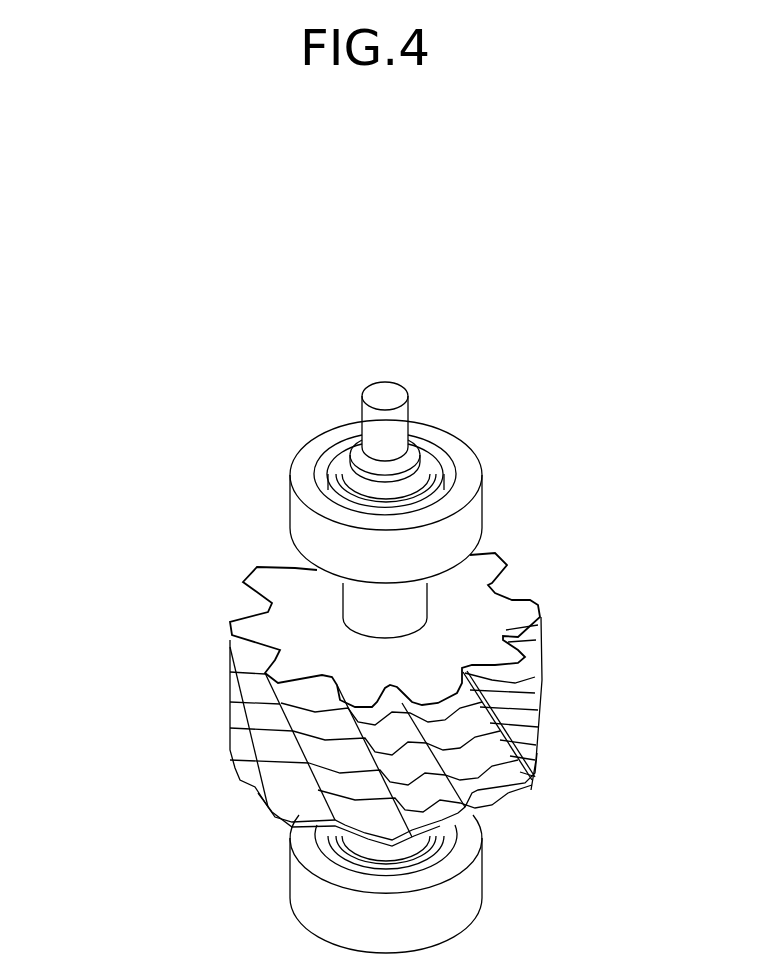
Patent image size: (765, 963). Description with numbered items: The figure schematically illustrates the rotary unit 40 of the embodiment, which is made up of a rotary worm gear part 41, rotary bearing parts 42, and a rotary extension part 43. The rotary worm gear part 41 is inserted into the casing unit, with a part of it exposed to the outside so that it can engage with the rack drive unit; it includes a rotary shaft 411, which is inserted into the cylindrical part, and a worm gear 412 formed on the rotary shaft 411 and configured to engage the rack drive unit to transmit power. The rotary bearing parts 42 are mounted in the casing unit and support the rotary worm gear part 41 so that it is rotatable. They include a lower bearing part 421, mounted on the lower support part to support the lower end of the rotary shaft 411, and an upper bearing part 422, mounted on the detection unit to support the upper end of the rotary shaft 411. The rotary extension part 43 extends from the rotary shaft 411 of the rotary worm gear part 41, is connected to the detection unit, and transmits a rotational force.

The rotary unit 40 is at (665, 262).
The rotary worm gear part 41 is at (685, 607).
The rotary shaft 411 is at (408, 602).
The worm gear 412 is at (525, 715).
The rotary bearing parts 42 is at (90, 607).
The lower bearing part 421 is at (312, 890).
The upper bearing part 422 is at (297, 518).
The rotary extension part 43 is at (397, 415).